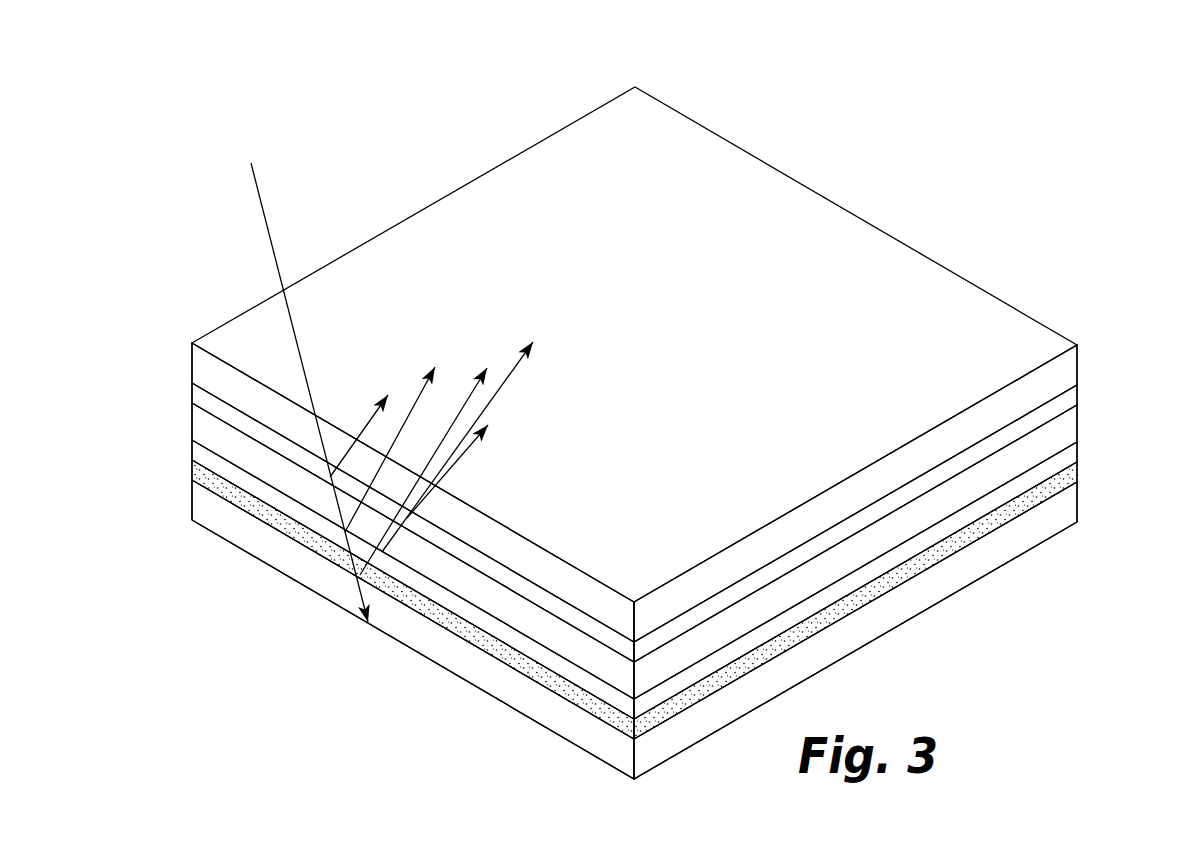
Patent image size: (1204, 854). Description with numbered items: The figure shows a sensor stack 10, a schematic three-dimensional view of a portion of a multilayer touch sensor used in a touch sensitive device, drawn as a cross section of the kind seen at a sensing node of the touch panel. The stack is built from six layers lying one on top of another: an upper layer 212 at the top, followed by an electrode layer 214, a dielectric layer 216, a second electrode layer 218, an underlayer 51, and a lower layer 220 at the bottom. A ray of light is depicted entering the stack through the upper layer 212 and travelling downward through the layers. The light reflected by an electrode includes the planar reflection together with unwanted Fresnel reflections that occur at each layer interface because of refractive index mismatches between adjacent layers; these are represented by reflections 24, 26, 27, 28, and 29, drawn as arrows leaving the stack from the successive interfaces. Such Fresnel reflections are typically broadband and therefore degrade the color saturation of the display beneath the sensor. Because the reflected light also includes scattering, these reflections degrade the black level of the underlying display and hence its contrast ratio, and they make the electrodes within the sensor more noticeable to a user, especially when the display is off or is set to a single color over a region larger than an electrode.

The sensor stack 10 is at (672, 433).
The upper layer 212 is at (1068, 364).
The electrode layer 214 is at (1068, 397).
The dielectric layer 216 is at (1068, 428).
The electrode layer 218 is at (1068, 459).
The underlayer 51 is at (1068, 472).
The lower layer 220 is at (1068, 510).
The reflection 24 is at (500, 388).
The reflection 26 is at (412, 392).
The reflection 27 is at (467, 390).
The reflection 28 is at (363, 420).
The reflection 29 is at (462, 462).